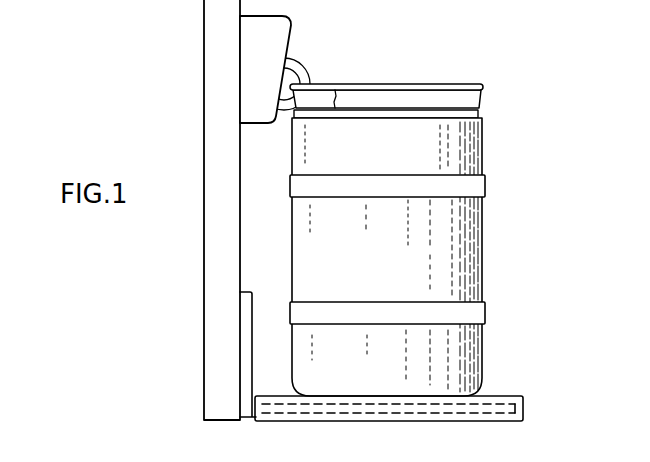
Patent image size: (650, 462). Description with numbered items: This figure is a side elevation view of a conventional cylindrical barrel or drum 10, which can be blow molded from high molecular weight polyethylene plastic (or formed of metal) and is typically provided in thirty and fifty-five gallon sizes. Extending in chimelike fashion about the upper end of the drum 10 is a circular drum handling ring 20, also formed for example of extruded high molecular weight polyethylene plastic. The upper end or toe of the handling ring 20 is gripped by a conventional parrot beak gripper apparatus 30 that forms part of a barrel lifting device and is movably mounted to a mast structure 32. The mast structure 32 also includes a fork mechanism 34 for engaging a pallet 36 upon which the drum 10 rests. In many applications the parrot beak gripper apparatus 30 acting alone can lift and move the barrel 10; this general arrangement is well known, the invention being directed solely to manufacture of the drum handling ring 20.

The drum 10 is at (421, 257).
The drum handling ring 20 is at (495, 99).
The parrot beak gripper apparatus 30 is at (312, 60).
The mast structure 32 is at (197, 260).
The fork mechanism 34 is at (259, 303).
The pallet 36 is at (493, 397).